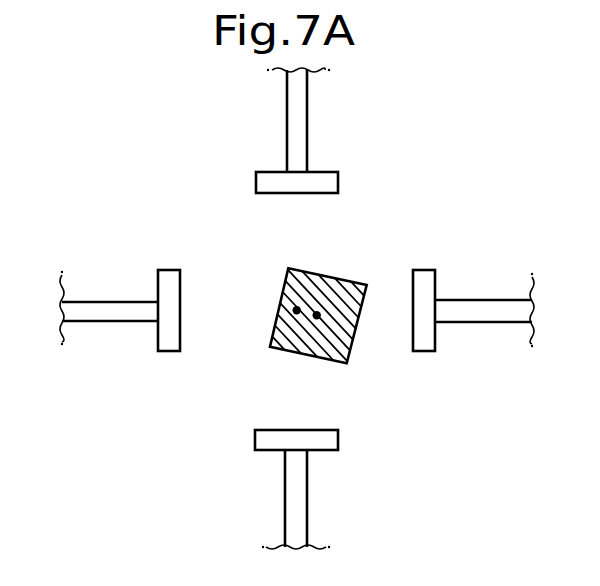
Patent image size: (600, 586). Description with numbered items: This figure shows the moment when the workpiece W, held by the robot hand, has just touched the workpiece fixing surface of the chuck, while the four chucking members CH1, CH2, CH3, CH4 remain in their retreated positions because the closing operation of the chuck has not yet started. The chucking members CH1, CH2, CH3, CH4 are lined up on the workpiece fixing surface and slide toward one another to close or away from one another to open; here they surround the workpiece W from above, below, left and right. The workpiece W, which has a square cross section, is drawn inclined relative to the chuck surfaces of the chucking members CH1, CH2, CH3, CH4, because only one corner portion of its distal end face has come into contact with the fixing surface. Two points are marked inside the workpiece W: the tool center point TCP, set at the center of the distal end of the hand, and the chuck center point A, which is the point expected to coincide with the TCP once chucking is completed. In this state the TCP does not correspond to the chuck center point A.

The chucking member CH1 is at (309, 161).
The chucking member CH2 is at (152, 323).
The chucking member CH3 is at (308, 467).
The chucking member CH4 is at (445, 297).
The workpiece W is at (282, 287).
The chuck center point A is at (296, 310).
The tool center point TCP is at (317, 315).